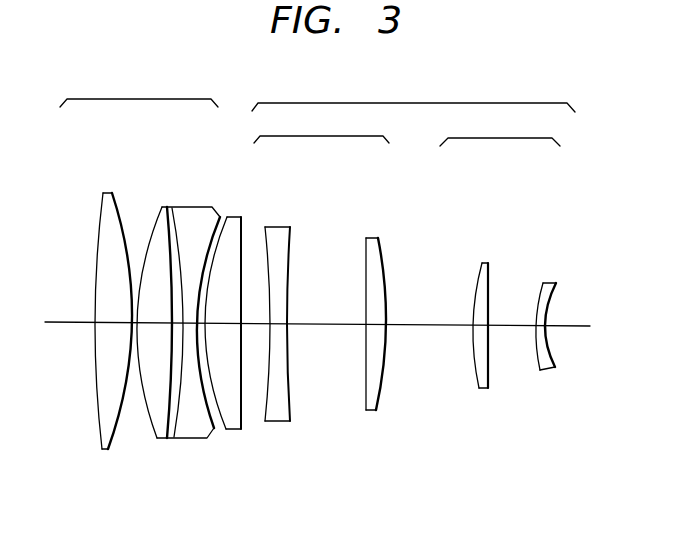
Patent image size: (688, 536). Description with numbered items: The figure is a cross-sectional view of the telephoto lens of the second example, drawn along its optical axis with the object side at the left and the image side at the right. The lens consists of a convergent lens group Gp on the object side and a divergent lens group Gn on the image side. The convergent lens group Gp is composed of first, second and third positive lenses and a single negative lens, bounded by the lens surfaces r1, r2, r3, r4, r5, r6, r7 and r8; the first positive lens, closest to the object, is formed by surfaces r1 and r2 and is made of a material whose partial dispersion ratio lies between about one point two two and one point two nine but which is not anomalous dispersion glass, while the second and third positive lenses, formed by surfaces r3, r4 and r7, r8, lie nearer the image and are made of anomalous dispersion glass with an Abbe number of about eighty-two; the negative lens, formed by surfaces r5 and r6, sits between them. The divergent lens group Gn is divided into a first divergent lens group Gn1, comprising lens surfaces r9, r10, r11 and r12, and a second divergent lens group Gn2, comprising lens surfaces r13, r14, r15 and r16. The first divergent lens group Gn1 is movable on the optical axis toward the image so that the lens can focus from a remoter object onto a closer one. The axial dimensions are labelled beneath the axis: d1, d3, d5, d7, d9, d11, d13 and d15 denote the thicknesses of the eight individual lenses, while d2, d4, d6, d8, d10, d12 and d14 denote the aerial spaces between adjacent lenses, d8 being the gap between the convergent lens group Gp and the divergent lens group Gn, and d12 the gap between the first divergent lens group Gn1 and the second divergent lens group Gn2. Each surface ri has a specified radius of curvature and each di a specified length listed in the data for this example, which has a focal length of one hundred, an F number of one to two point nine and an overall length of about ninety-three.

The convergent lens group Gp is at (139, 90).
The divergent lens group Gn is at (413, 93).
The first divergent lens group Gn1 is at (321, 128).
The second divergent lens group Gn2 is at (500, 131).
The first lens surface r1 is at (103, 193).
The second lens surface r2 is at (112, 193).
The third lens surface r3 is at (160, 207).
The fourth lens surface r4 is at (168, 207).
The fifth lens surface r5 is at (172, 207).
The sixth lens surface r6 is at (220, 212).
The seventh lens surface r7 is at (228, 217).
The eighth lens surface r8 is at (242, 217).
The ninth lens surface r9 is at (265, 227).
The tenth lens surface r10 is at (290, 227).
The eleventh lens surface r11 is at (366, 238).
The twelfth lens surface r12 is at (378, 238).
The thirteenth lens surface r13 is at (482, 263).
The fourteenth lens surface r14 is at (488, 263).
The fifteenth lens surface r15 is at (543, 283).
The sixteenth lens surface r16 is at (555, 283).
The thickness of first lens d1 is at (113, 323).
The aerial space between first and second lenses d2 is at (135, 323).
The thickness of second lens d3 is at (152, 323).
The aerial space between second and third lenses d4 is at (177, 323).
The thickness of third lens d5 is at (190, 323).
The aerial space between third and fourth lenses d6 is at (201, 323).
The thickness of fourth lens d7 is at (222, 323).
The aerial space between convergent and divergent groups d8 is at (255, 324).
The thickness of fifth lens d9 is at (278, 324).
The aerial space between fifth and sixth lenses d10 is at (326, 324).
The thickness of sixth lens d11 is at (375, 325).
The aerial space between first and second divergent groups d12 is at (428, 325).
The thickness of seventh lens d13 is at (478, 325).
The aerial space between seventh and eighth lenses d14 is at (511, 325).
The thickness of eighth lens d15 is at (538, 325).